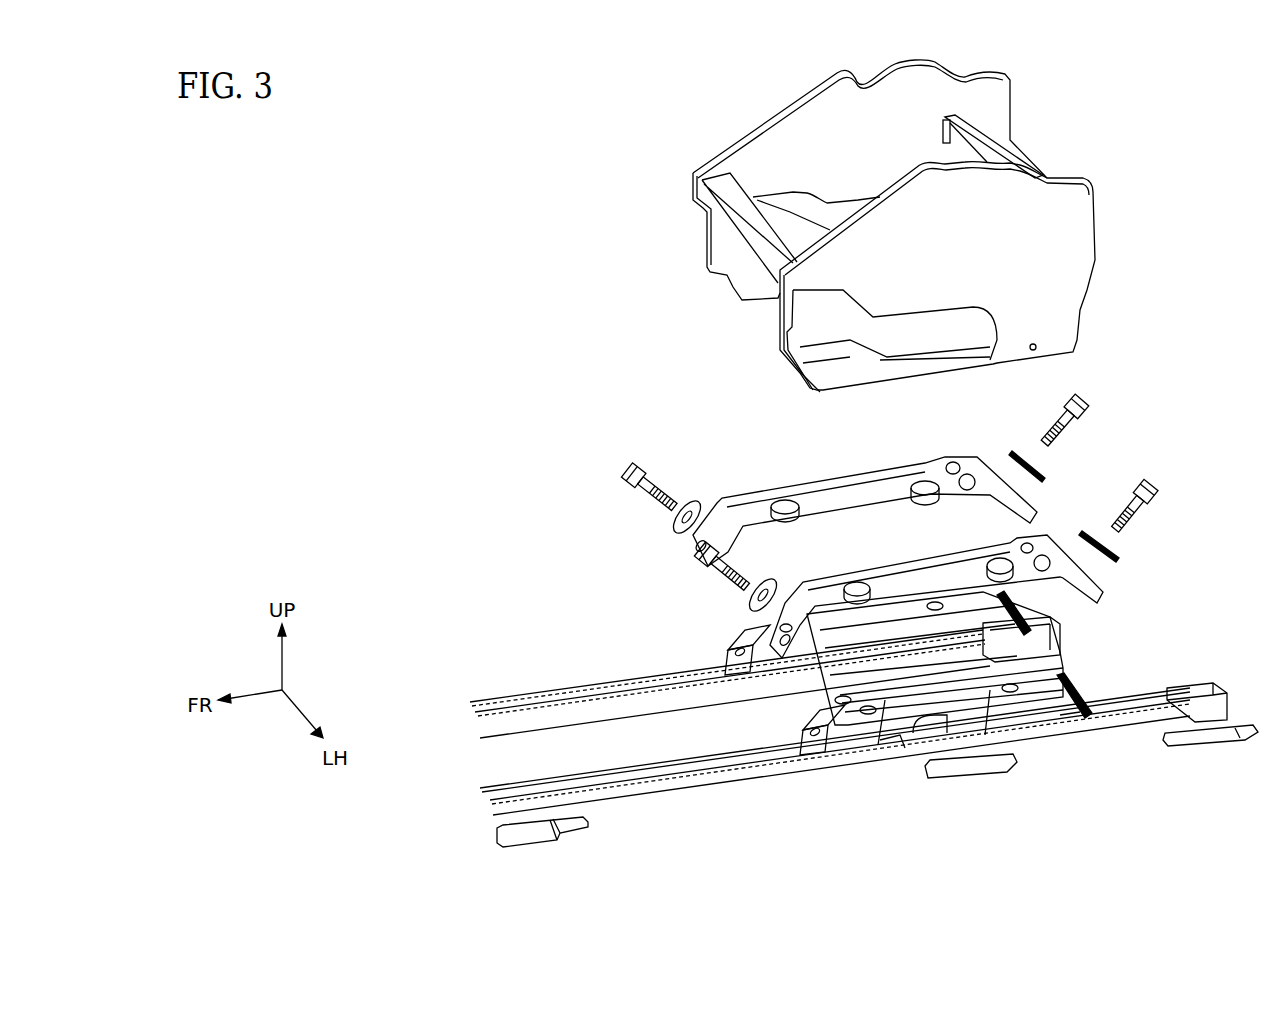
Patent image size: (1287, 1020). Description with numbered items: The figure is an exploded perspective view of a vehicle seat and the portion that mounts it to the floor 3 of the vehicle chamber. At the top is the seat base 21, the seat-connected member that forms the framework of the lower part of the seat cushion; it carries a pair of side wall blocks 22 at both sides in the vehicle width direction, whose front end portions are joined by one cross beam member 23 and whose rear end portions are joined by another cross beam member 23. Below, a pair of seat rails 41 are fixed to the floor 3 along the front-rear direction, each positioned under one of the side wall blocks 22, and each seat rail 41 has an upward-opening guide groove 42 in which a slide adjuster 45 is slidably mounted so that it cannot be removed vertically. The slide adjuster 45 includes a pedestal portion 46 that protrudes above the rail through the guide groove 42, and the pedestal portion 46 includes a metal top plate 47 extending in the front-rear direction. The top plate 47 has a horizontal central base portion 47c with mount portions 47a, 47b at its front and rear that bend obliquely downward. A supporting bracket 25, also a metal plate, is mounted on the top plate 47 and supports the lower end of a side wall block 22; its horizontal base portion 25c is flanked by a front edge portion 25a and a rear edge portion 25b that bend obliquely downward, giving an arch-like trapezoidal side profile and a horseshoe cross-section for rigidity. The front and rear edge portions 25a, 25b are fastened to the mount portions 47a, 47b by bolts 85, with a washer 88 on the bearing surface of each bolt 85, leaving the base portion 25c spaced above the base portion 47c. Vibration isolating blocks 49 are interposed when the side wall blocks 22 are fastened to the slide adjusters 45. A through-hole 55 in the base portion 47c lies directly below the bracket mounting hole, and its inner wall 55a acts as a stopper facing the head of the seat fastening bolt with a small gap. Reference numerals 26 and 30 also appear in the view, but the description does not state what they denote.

The floor 3 is at (1180, 768).
The seat base 21 is at (901, 221).
The side wall block 22 is at (735, 152).
The cross beam member 23 is at (1005, 145).
The supporting bracket 25 is at (891, 535).
The front edge portion 25a is at (693, 541).
The rear edge portion 25b is at (1037, 512).
The base portion 25c is at (860, 478).
The hole 26 is at (937, 560).
The nut 30 is at (785, 623).
The seat rail 41 is at (486, 690).
The guide groove 42 is at (600, 688).
The slide adjuster 45 is at (1012, 596).
The pedestal portion 46 is at (882, 745).
The top plate 47 is at (932, 723).
The mount portion 47a is at (740, 676).
The mount portion 47b is at (1107, 710).
The base portion 47c is at (878, 746).
The vibration isolating block 49 is at (782, 502).
The through-hole 55 is at (920, 728).
The inner wall 55a is at (838, 702).
The bolt 85 is at (630, 466).
The washer 88 is at (668, 520).